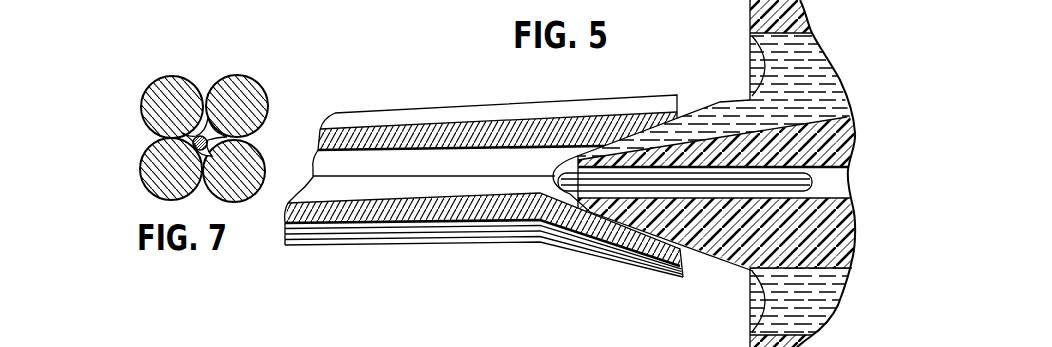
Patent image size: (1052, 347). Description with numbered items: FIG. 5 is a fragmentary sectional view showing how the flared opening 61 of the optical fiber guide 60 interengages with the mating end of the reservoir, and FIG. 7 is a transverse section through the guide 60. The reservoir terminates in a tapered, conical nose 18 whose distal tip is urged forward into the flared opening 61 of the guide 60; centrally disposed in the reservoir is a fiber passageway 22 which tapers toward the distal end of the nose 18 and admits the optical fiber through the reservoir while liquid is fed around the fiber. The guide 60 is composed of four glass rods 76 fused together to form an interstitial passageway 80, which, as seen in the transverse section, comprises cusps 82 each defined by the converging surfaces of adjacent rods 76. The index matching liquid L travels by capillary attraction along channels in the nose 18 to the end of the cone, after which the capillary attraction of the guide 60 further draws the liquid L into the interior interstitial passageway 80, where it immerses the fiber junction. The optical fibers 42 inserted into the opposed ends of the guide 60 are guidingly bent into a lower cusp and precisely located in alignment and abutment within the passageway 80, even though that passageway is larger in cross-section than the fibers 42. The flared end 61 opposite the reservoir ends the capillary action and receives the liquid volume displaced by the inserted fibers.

In FIG. 5, the tapered nose 18 is at (718, 252).
In FIG. 5, the fiber passageway 22 is at (838, 190).
In FIG. 5, the optical fibers 42 is at (728, 182).
In FIG. 5, the guide 60 is at (483, 204).
In FIG. 7, the guide 60 is at (202, 116).
In FIG. 5, the flared opening 61 is at (641, 245).
In FIG. 7, the strength members 76 is at (180, 87).
In FIG. 5, the interstitial passageway 80 is at (557, 178).
In FIG. 7, the interstitial passageway 80 is at (210, 148).
In FIG. 7, the cusps 82 is at (196, 131).
In FIG. 5, the index matching liquid L is at (700, 122).